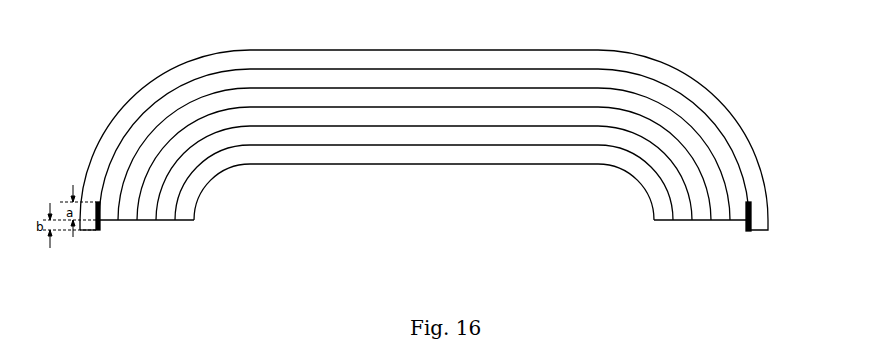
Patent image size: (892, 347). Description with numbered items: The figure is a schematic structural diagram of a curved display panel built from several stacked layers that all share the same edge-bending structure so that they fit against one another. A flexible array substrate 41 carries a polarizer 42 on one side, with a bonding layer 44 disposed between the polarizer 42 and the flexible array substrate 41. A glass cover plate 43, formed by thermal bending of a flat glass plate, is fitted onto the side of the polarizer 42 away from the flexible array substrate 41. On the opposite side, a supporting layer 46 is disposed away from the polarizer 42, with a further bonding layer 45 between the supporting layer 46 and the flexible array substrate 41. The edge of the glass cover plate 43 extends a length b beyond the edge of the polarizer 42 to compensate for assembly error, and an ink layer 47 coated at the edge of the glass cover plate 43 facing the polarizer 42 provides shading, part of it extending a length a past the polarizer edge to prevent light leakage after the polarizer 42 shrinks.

The flexible array substrate 41 is at (695, 183).
The polarizer 42 is at (735, 193).
The glass cover plate 43 is at (760, 220).
The bonding layer 44 is at (712, 183).
The bonding layer 45 is at (668, 173).
The supporting layer 46 is at (633, 167).
The ink layer 47 is at (100, 223).